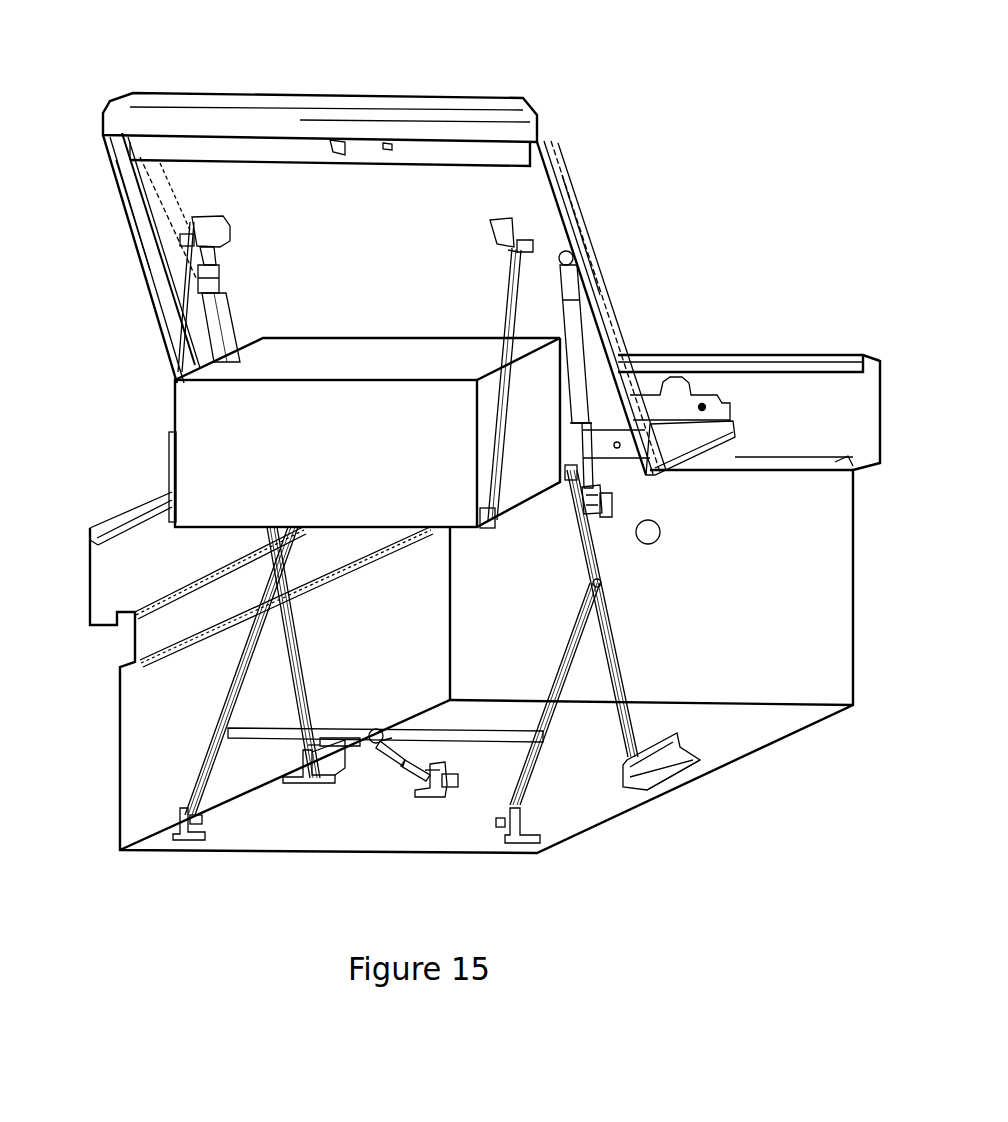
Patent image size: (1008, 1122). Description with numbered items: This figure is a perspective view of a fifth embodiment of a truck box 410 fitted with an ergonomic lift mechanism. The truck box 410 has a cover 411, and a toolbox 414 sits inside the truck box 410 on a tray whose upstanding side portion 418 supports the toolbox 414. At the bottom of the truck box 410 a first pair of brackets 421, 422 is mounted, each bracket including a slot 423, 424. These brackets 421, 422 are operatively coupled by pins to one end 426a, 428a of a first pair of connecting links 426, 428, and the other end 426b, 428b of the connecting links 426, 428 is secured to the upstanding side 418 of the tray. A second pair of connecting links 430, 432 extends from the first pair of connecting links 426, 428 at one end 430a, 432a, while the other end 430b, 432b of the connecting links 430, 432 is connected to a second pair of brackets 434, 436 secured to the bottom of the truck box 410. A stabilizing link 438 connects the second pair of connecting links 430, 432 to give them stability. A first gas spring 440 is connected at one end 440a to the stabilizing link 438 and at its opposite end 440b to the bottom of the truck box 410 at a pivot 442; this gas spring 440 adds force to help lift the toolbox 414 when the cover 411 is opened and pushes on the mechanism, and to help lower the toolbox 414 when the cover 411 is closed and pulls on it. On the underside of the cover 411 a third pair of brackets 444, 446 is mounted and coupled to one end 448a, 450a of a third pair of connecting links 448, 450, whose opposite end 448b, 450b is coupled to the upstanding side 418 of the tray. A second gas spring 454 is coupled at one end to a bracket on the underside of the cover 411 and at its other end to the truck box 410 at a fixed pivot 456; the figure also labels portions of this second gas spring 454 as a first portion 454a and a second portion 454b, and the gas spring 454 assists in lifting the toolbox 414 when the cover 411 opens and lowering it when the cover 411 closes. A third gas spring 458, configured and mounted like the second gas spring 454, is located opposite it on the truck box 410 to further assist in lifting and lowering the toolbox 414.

The truck box 410 is at (781, 196).
The cover 411 is at (547, 144).
The toolbox 414 is at (298, 441).
The upstanding side portion 418 is at (537, 485).
The bracket 421 is at (685, 782).
The bracket 422 is at (320, 790).
The slot 423 is at (660, 760).
The slot 424 is at (335, 745).
The connecting link 426 is at (612, 615).
The end of connecting link 426a is at (643, 697).
The end of connecting link 426b is at (551, 518).
The connecting link 428 is at (308, 640).
The end of connecting link 428a is at (286, 760).
The end of connecting link 428b is at (303, 541).
The connecting link 430 is at (565, 660).
The end of connecting link 430a is at (596, 577).
The end of connecting link 430b is at (560, 845).
The connecting link 432 is at (232, 700).
The end of connecting link 432a is at (251, 595).
The end of connecting link 432b is at (180, 860).
The bracket 434 is at (520, 822).
The bracket 436 is at (165, 833).
The stabilizing link 438 is at (430, 732).
The first gas spring 440 is at (405, 778).
The end of first gas spring 440a is at (374, 726).
The end of first gas spring 440b is at (411, 813).
The pivot 442 is at (438, 800).
The bracket 444 is at (490, 226).
The bracket 446 is at (228, 228).
The connecting link 448 is at (503, 322).
The end of connecting link 448a is at (496, 265).
The end of connecting link 448b is at (476, 498).
The connecting link 450 is at (177, 337).
The end of connecting link 450a is at (160, 246).
The end of connecting link 450b is at (149, 495).
The second gas spring 454 is at (595, 355).
The lid arm upper portion 454a is at (604, 269).
The lid arm lower portion 454b is at (617, 534).
The fixed pivot 456 is at (620, 516).
The third gas spring 458 is at (213, 320).